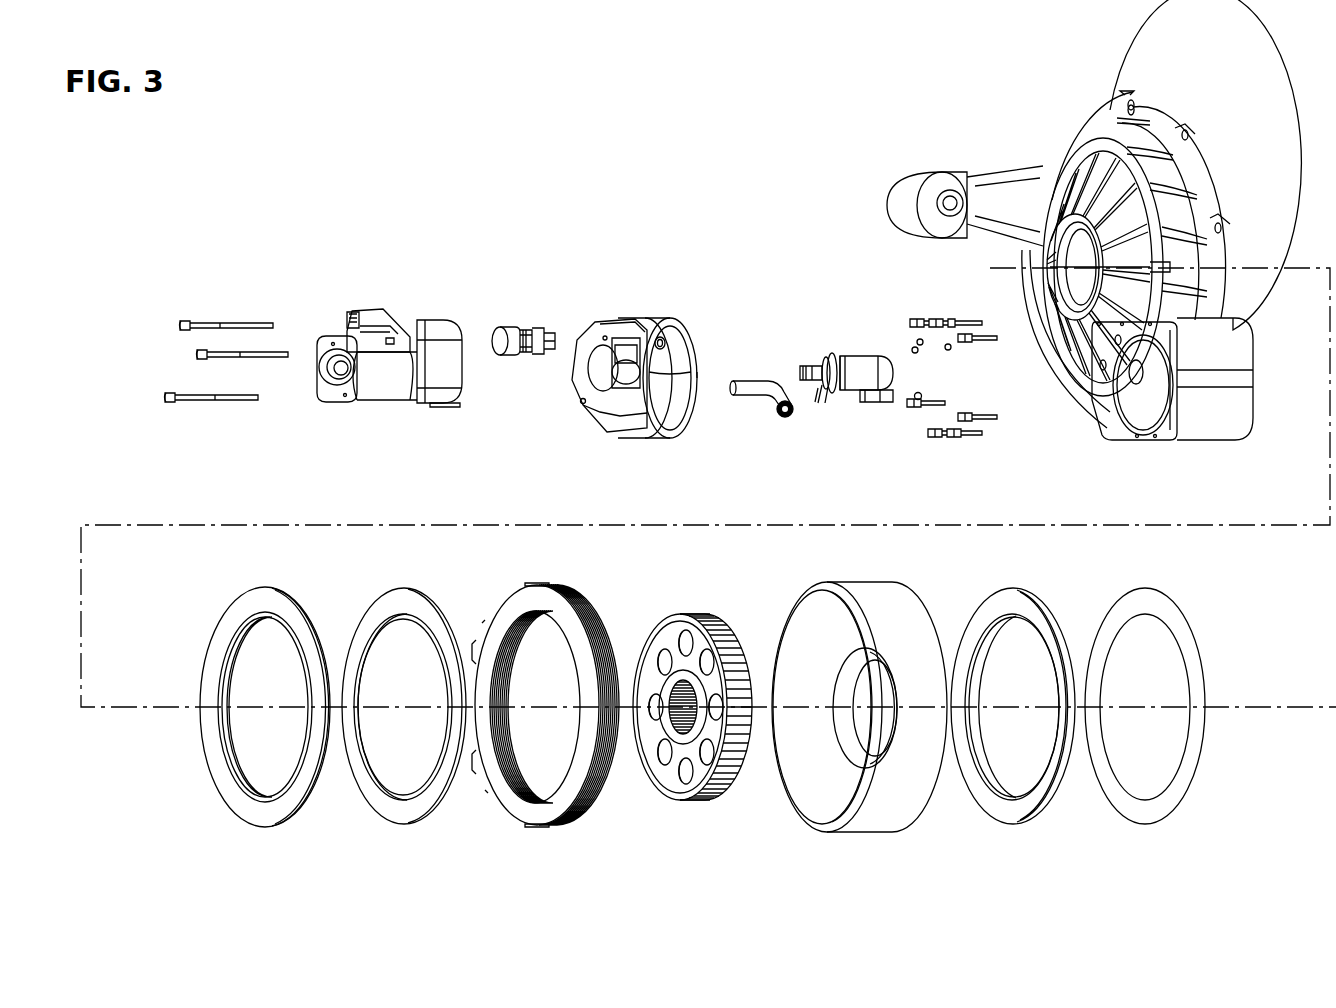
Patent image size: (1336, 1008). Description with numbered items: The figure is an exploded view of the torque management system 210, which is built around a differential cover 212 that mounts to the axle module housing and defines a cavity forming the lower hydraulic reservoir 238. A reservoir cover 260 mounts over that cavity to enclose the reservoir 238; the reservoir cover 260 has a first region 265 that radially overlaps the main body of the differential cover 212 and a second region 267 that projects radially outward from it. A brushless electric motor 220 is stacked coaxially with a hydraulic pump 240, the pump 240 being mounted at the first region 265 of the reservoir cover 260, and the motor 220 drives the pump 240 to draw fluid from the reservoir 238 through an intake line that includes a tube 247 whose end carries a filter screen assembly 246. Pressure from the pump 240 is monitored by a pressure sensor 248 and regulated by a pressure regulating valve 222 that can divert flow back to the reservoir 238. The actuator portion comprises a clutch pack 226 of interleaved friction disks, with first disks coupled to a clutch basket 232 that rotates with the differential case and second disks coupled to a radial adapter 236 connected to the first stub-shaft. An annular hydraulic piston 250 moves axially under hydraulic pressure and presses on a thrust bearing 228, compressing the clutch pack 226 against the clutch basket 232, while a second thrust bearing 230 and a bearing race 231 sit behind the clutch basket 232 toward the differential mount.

The torque management system 210 is at (605, 77).
The differential cover 212 is at (1172, 120).
The brushless electric motor 220 is at (350, 311).
The pressure regulating valve 222 is at (853, 355).
The clutch pack 226 is at (582, 825).
The thrust bearing 228 is at (412, 824).
The thrust bearing 230 is at (1017, 814).
The bearing race 231 is at (1148, 819).
The clutch basket 232 is at (875, 826).
The radial adapter 236 is at (698, 801).
The lower hydraulic reservoir 238 is at (1202, 434).
The hydraulic pump 240 is at (432, 320).
The filter screen assembly 246 is at (780, 416).
The tube 247 is at (755, 383).
The pressure sensor 248 is at (520, 327).
The annular hydraulic piston 250 is at (276, 826).
The reservoir cover 260 is at (675, 322).
The first region 265 is at (600, 337).
The second region 267 is at (613, 408).